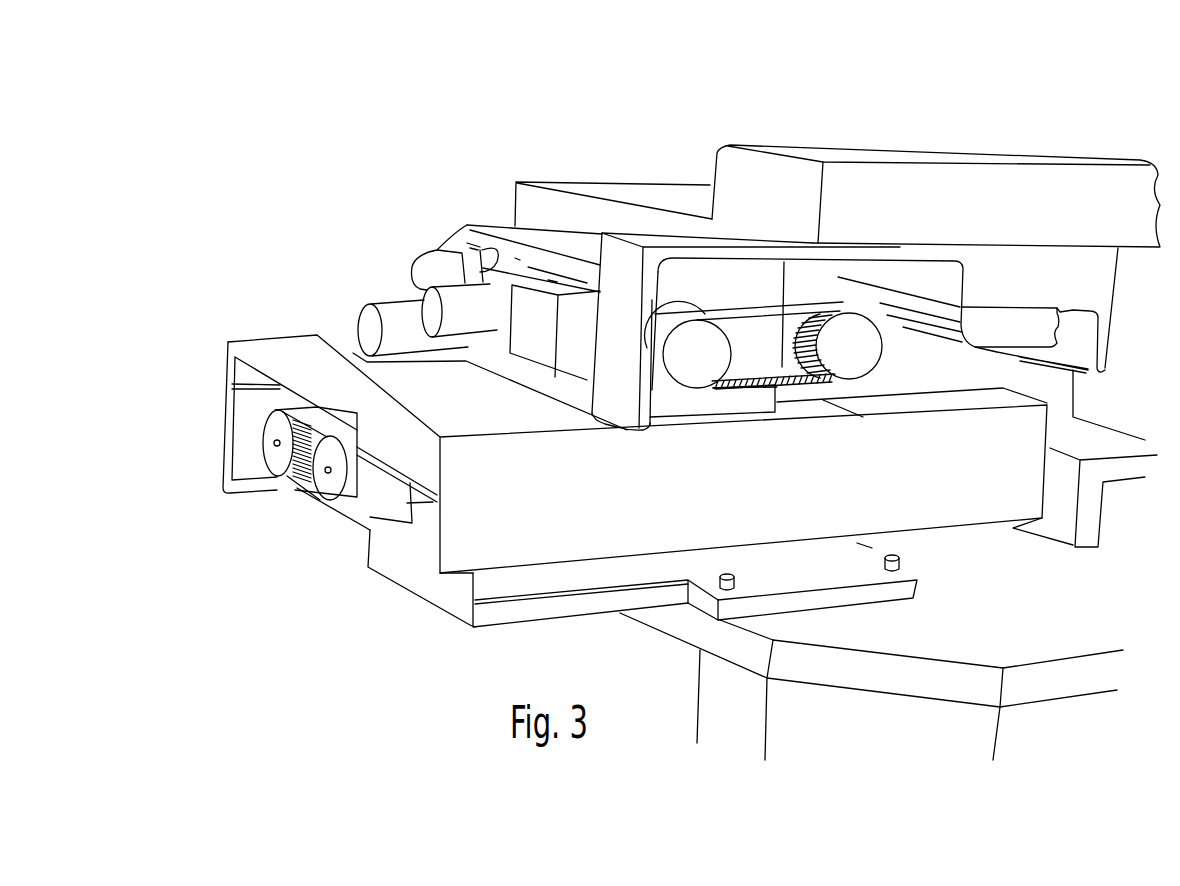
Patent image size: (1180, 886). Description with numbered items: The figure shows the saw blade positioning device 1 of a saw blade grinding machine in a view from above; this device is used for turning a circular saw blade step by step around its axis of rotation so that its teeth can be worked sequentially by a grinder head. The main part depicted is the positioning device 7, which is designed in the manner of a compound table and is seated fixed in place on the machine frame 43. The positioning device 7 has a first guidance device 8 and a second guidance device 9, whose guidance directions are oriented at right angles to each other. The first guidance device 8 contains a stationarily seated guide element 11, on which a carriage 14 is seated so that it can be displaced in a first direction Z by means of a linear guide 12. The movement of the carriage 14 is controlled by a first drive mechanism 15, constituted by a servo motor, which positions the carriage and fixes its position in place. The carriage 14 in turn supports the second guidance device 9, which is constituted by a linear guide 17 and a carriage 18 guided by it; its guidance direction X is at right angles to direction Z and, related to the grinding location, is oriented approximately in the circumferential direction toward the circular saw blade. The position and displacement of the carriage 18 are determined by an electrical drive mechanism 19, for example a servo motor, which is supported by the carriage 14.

The saw blade positioning device 1 is at (697, 100).
The positioning device 7 is at (488, 138).
The first guidance device 8 is at (423, 522).
The second guidance device 9 is at (918, 337).
The guide element 11 is at (393, 495).
The linear guide 12 is at (387, 475).
The carriage 14 is at (432, 420).
The first drive mechanism 15 is at (260, 497).
The linear guide 17 is at (897, 318).
The carriage 18 is at (983, 313).
The electrical drive mechanism 19 is at (695, 350).
The machine frame 43 is at (1020, 643).